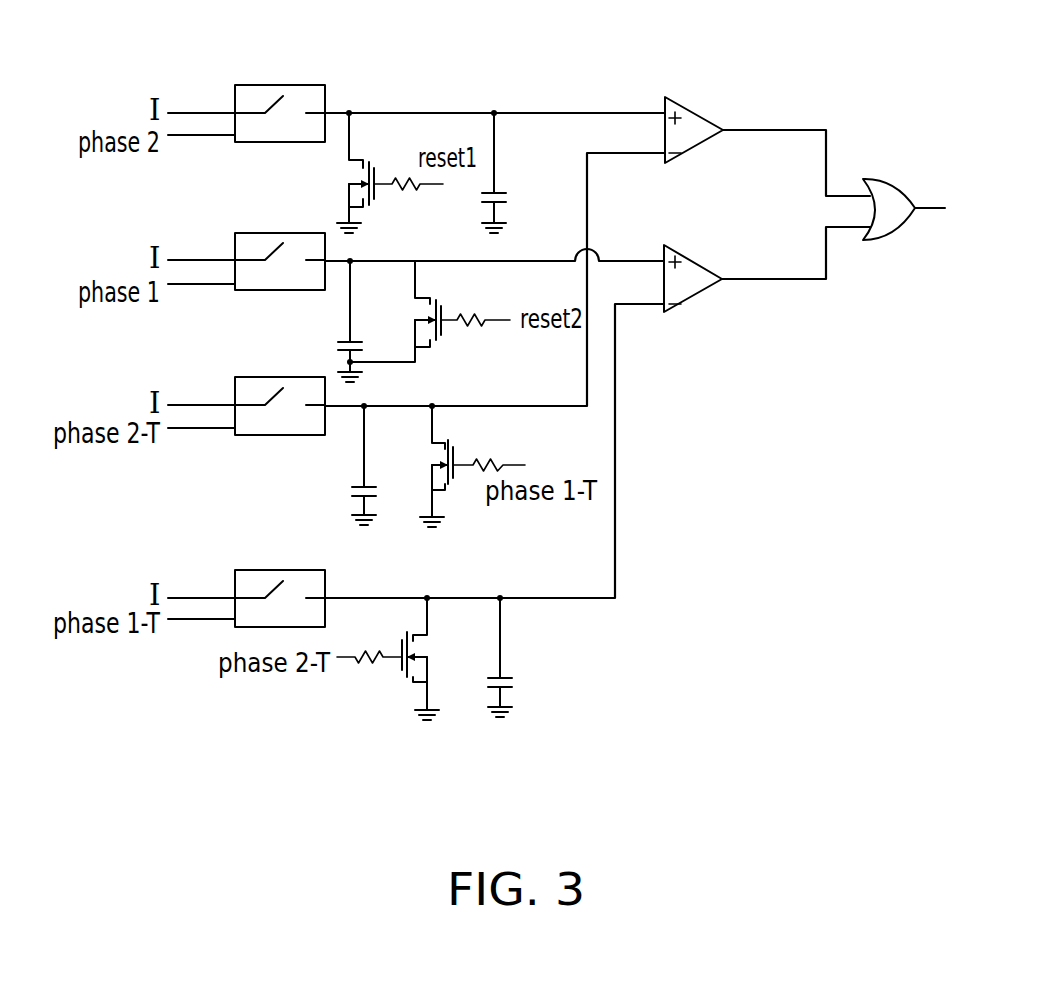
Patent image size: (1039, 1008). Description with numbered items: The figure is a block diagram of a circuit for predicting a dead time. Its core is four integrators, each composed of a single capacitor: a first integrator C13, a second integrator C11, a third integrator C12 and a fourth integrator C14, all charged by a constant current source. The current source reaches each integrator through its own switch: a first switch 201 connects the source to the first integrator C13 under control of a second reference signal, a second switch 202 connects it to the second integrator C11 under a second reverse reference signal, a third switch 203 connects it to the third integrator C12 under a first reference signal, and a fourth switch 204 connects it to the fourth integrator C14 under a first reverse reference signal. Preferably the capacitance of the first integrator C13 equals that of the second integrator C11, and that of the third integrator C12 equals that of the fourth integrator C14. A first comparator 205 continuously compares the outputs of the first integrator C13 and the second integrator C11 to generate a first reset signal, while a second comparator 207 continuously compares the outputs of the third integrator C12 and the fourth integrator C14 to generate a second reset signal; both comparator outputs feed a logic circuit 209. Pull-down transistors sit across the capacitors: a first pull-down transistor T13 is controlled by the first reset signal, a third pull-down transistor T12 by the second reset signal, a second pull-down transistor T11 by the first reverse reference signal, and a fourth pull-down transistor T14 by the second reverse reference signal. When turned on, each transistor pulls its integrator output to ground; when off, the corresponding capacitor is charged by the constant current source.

The first switch 201 is at (305, 85).
The third switch 203 is at (262, 233).
The second switch 202 is at (262, 378).
The fourth switch 204 is at (262, 568).
The first comparator 205 is at (693, 108).
The second comparator 207 is at (690, 301).
The logic circuit 209 is at (902, 185).
The first pull-down transistor T13 is at (348, 197).
The first integrator C13 is at (497, 190).
The third pull-down transistor T12 is at (417, 333).
The third integrator C12 is at (343, 350).
The second pull-down transistor T11 is at (430, 478).
The second integrator C11 is at (357, 490).
The fourth pull-down transistor T14 is at (428, 667).
The fourth integrator C14 is at (507, 673).